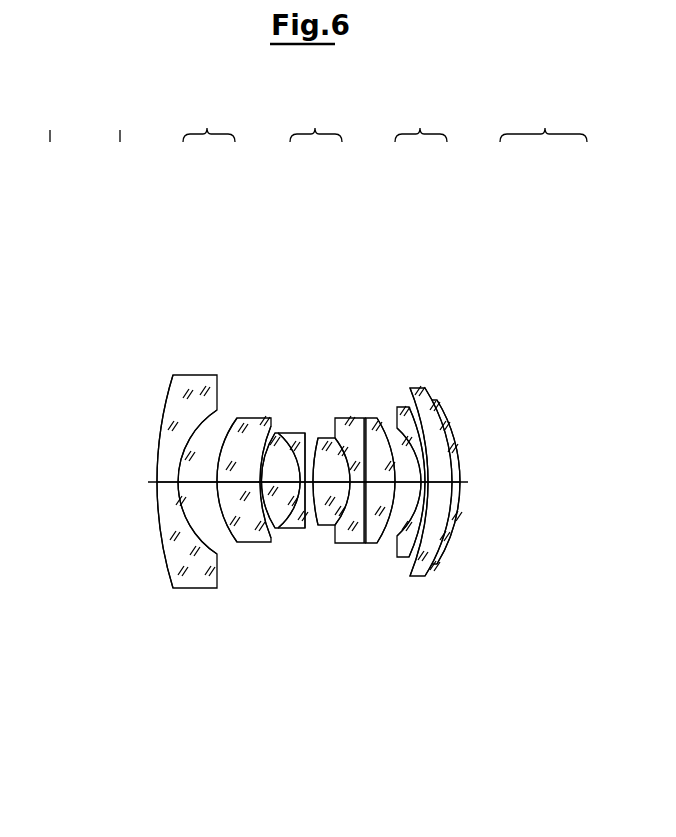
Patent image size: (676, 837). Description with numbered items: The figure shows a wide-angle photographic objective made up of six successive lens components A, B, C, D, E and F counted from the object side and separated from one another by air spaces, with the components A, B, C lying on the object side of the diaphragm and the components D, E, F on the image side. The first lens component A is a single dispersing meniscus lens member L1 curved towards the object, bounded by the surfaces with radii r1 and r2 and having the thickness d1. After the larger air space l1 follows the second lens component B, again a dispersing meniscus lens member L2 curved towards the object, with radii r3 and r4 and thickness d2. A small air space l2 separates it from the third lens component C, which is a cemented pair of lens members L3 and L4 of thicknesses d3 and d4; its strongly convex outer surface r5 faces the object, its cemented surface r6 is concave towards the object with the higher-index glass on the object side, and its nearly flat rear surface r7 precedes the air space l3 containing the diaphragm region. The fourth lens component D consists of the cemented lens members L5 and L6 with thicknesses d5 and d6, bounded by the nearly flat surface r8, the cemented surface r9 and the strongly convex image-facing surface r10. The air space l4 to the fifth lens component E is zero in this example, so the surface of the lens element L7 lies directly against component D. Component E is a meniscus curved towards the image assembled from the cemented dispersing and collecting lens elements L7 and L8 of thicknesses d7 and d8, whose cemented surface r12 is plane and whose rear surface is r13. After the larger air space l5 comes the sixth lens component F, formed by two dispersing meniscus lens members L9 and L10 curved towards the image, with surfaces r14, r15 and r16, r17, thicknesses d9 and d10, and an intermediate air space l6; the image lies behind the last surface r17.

The first lens component A is at (50, 125).
The second lens component B is at (120, 125).
The third lens component C is at (209, 125).
The fourth lens component D is at (316, 125).
The fifth lens component E is at (421, 125).
The sixth lens component F is at (543, 125).
The lens member L1 is at (48, 212).
The lens member L2 is at (119, 212).
The lens member L3 is at (190, 212).
The lens member L4 is at (226, 212).
The lens member L5 is at (297, 212).
The lens member L6 is at (332, 212).
The lens element L7 is at (402, 212).
The lens element L8 is at (437, 212).
The lens member L9 is at (507, 212).
The lens member L10 is at (578, 212).
The thickness of lens L1 d1 is at (109, 351).
The thickness of lens L2 d2 is at (185, 351).
The thickness of lens L3 d3 is at (241, 351).
The thickness of lens L4 d4 is at (261, 351).
The thickness of lens L5 d5 is at (319, 351).
The thickness of lens L6 d6 is at (344, 351).
The thickness of lens L7 d7 is at (386, 351).
The thickness of lens L8 d8 is at (412, 351).
The thickness of lens L9 d9 is at (469, 351).
The thickness of lens L10 d10 is at (520, 351).
The air space l1 is at (148, 351).
The air space l2 is at (206, 351).
The air space l3 is at (285, 351).
The air space l4 is at (365, 351).
The air space l5 is at (436, 351).
The air space l6 is at (486, 351).
The radius of curvature r1 is at (160, 545).
The radius of curvature r2 is at (193, 535).
The radius of curvature r3 is at (222, 528).
The radius of curvature r4 is at (260, 523).
The radius of curvature r5 is at (271, 525).
The radius of curvature r6 is at (289, 521).
The radius of curvature r7 is at (305, 524).
The radius of curvature r8 is at (318, 523).
The radius of curvature r9 is at (336, 521).
The radius of curvature r10 is at (348, 544).
The radius of curvature r12 is at (366, 544).
The radius of curvature r13 is at (388, 532).
The radius of curvature r14 is at (414, 548).
The radius of curvature r15 is at (422, 523).
The radius of curvature r16 is at (439, 527).
The radius of curvature r17 is at (455, 523).